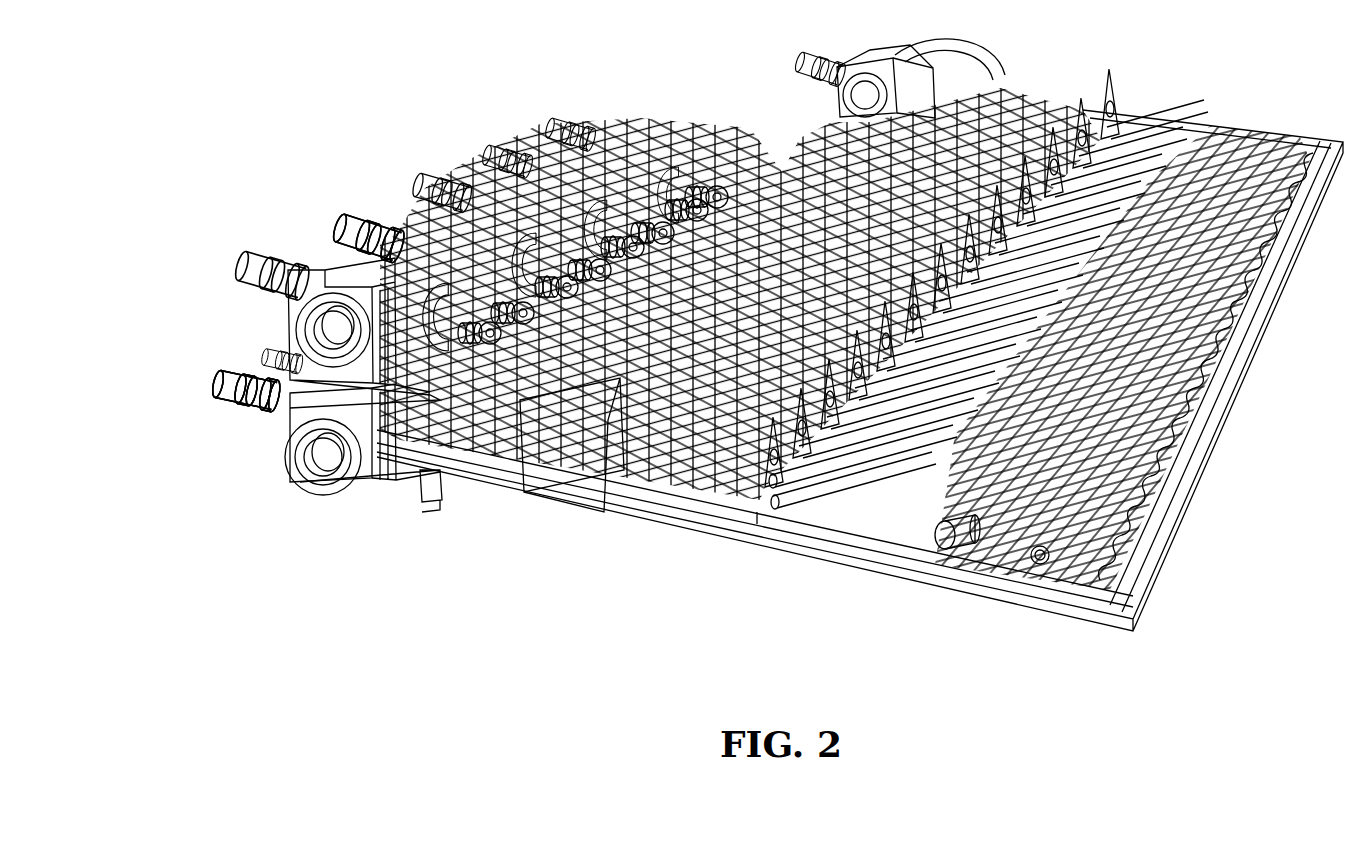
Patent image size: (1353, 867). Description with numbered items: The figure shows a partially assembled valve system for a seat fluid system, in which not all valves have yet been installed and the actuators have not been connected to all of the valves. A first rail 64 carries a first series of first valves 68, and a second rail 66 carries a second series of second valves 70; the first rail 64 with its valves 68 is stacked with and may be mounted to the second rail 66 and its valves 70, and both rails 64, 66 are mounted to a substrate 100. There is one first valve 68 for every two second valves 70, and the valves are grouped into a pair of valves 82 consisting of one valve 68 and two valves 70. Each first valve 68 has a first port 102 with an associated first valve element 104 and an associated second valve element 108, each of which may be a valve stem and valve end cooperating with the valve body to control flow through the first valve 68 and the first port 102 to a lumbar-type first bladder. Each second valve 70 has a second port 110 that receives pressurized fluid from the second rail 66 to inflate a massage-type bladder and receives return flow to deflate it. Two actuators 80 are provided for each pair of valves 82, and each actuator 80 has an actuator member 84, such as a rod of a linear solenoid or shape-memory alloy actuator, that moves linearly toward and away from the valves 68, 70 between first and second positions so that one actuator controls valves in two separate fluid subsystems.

The first rail 64 is at (338, 334).
The second rail 66 is at (323, 460).
The first valve 68 is at (340, 247).
The second valve 70 is at (285, 408).
The actuator 80 is at (710, 470).
The pair of valves 82 is at (403, 264).
The actuator member 84 is at (557, 440).
The substrate 100 is at (925, 580).
The first port 102 is at (240, 263).
The first valve element 104 is at (447, 317).
The second valve element 108 is at (445, 300).
The second port 110 is at (213, 383).